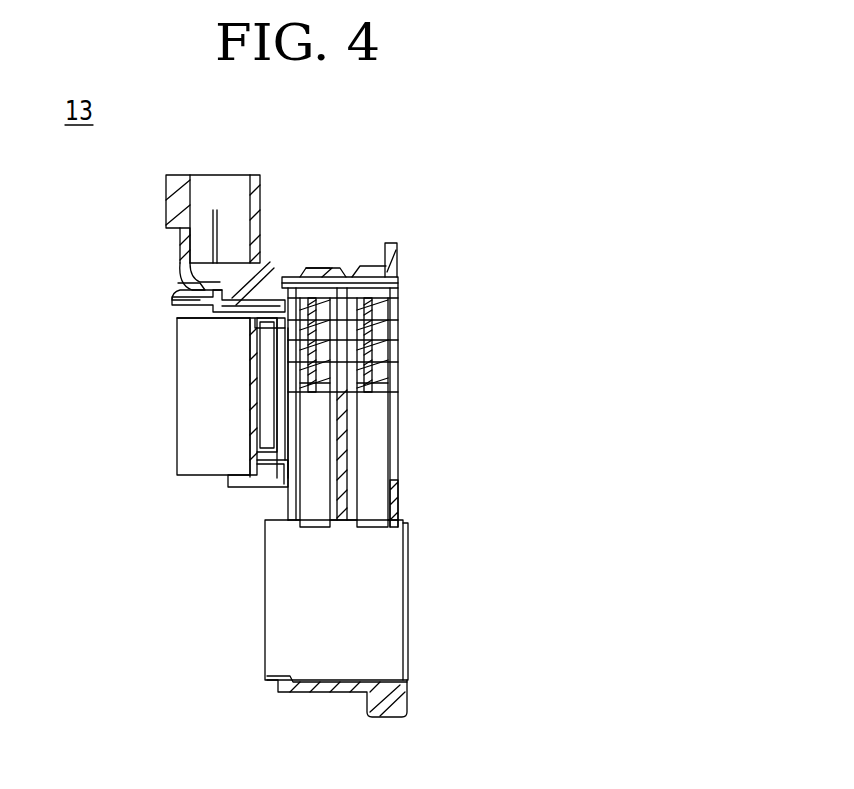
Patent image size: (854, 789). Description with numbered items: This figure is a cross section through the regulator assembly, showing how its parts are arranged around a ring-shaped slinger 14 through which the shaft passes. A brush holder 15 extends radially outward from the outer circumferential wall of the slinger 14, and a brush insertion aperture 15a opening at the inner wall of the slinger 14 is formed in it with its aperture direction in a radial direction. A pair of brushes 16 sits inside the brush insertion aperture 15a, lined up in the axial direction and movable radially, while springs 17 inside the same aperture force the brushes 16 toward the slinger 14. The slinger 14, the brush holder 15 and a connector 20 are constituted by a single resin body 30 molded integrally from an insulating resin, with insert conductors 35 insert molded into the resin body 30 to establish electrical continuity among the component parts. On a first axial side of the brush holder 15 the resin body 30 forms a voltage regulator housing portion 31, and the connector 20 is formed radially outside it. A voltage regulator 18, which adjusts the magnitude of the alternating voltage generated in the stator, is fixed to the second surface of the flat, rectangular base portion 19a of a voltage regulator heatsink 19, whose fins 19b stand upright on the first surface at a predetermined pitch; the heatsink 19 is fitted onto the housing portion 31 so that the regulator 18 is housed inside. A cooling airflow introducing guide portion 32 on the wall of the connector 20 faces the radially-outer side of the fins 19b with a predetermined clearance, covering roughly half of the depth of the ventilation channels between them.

The slinger 14 is at (408, 658).
The brush holder 15 is at (400, 402).
The brush insertion aperture 15a is at (384, 490).
The brushes 16 is at (312, 485).
The springs 17 is at (398, 345).
The voltage regulator 18 is at (268, 430).
The voltage regulator heatsink 19 is at (166, 397).
The base portion 19a is at (253, 418).
The fins 19b is at (202, 378).
The connector 20 is at (165, 196).
The resin body 30 is at (398, 270).
The voltage regulator housing portion 31 is at (263, 482).
The cooling airflow introducing guide portion 32 is at (190, 304).
The insert conductors 35 is at (187, 270).